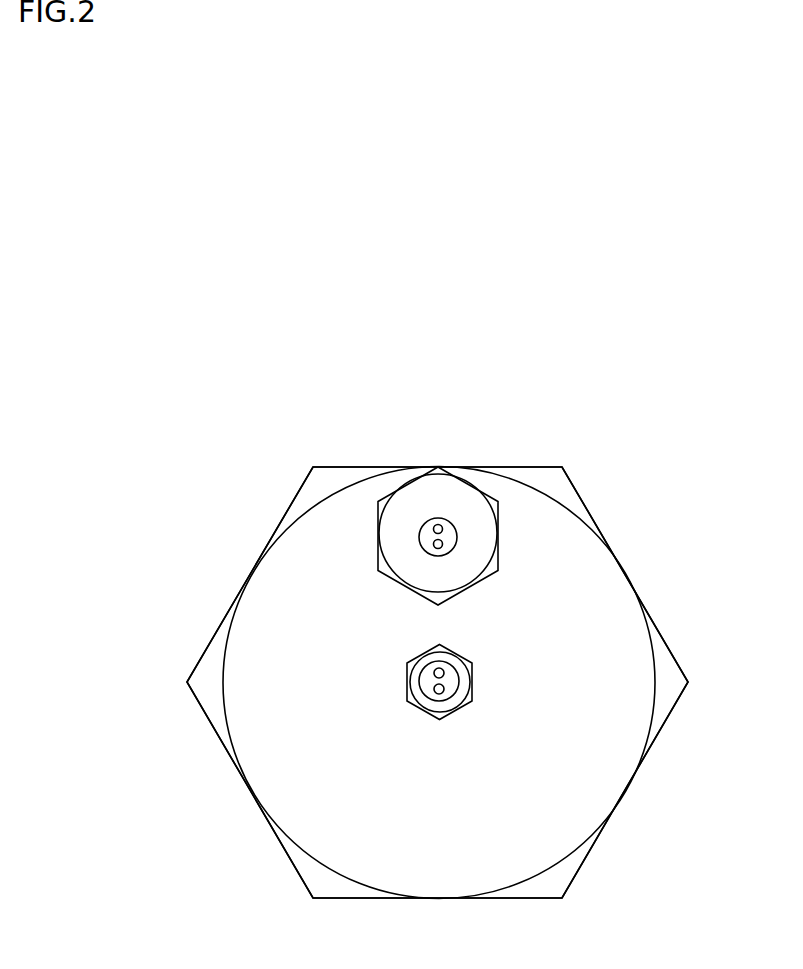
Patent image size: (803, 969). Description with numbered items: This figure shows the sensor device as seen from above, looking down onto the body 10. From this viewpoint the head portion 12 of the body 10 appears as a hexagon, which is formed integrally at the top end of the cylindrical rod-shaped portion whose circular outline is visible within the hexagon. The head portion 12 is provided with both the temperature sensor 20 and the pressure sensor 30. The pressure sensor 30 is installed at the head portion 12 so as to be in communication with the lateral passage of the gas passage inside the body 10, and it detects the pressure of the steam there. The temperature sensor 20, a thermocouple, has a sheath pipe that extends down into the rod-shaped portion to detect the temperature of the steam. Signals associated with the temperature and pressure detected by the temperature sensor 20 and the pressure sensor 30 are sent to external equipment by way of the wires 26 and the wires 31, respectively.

The body 10 is at (437, 682).
The head portion 12 is at (294, 497).
The temperature sensor 20 is at (454, 716).
The wires 26 is at (445, 689).
The pressure sensor 30 is at (469, 476).
The wires 31 is at (444, 543).